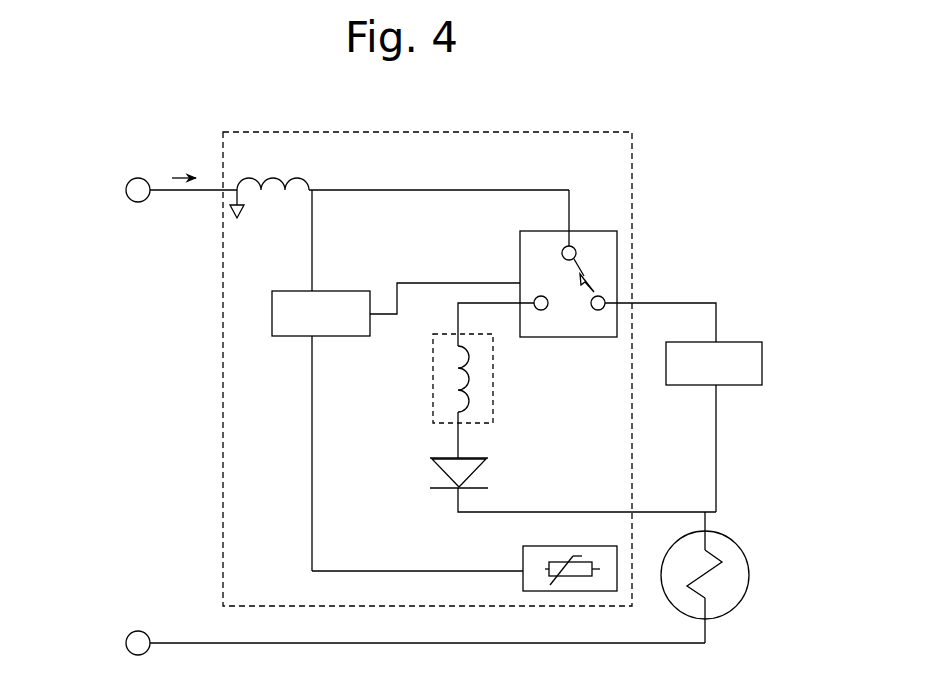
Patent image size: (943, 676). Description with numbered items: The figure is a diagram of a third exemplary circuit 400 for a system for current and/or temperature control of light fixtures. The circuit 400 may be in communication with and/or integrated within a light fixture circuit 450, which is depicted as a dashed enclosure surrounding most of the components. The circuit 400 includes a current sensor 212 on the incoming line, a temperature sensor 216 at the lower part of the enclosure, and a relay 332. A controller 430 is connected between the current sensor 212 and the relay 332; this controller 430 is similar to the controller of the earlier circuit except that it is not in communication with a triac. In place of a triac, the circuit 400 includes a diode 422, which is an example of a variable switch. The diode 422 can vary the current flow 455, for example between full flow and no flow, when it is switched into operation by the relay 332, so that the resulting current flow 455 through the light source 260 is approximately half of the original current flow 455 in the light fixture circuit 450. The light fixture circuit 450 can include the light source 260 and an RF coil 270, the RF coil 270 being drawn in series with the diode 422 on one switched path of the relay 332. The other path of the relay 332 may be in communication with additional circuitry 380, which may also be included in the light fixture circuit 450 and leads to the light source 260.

The circuit 400 is at (458, 375).
The light fixture circuit 450 is at (404, 126).
The current flow 455 is at (180, 156).
The current sensor 212 is at (276, 170).
The relay 332 is at (518, 226).
The controller 430 is at (328, 327).
The RF coil 270 is at (430, 366).
The diode 422 is at (430, 452).
The temperature sensor 216 is at (534, 542).
The additional circuitry 380 is at (721, 378).
The light source 260 is at (745, 545).